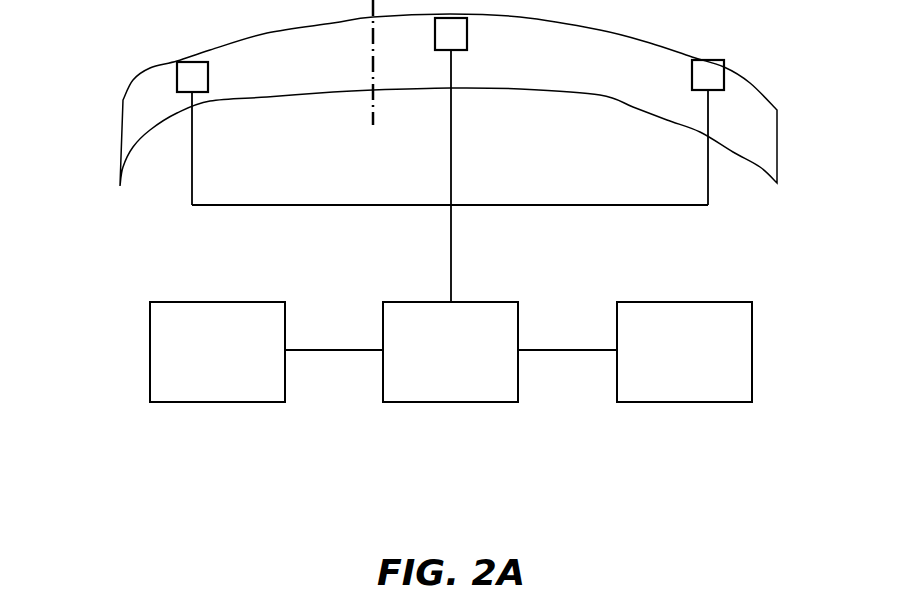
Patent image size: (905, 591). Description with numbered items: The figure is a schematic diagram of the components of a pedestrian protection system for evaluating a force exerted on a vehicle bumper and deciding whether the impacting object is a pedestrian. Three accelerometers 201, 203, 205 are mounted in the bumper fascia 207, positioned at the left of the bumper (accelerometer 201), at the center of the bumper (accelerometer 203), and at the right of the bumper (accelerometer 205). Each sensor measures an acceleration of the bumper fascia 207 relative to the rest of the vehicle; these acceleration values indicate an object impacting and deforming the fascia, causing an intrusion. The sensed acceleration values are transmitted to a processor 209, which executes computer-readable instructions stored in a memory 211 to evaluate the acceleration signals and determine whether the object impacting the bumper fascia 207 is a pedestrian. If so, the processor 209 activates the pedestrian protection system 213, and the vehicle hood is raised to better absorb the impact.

The accelerometer 201 is at (201, 90).
The accelerometer 203 is at (460, 48).
The accelerometer 205 is at (694, 88).
The bumper fascia 207 is at (138, 122).
The processor 209 is at (417, 402).
The memory 211 is at (192, 402).
The pedestrian protection system 213 is at (652, 402).